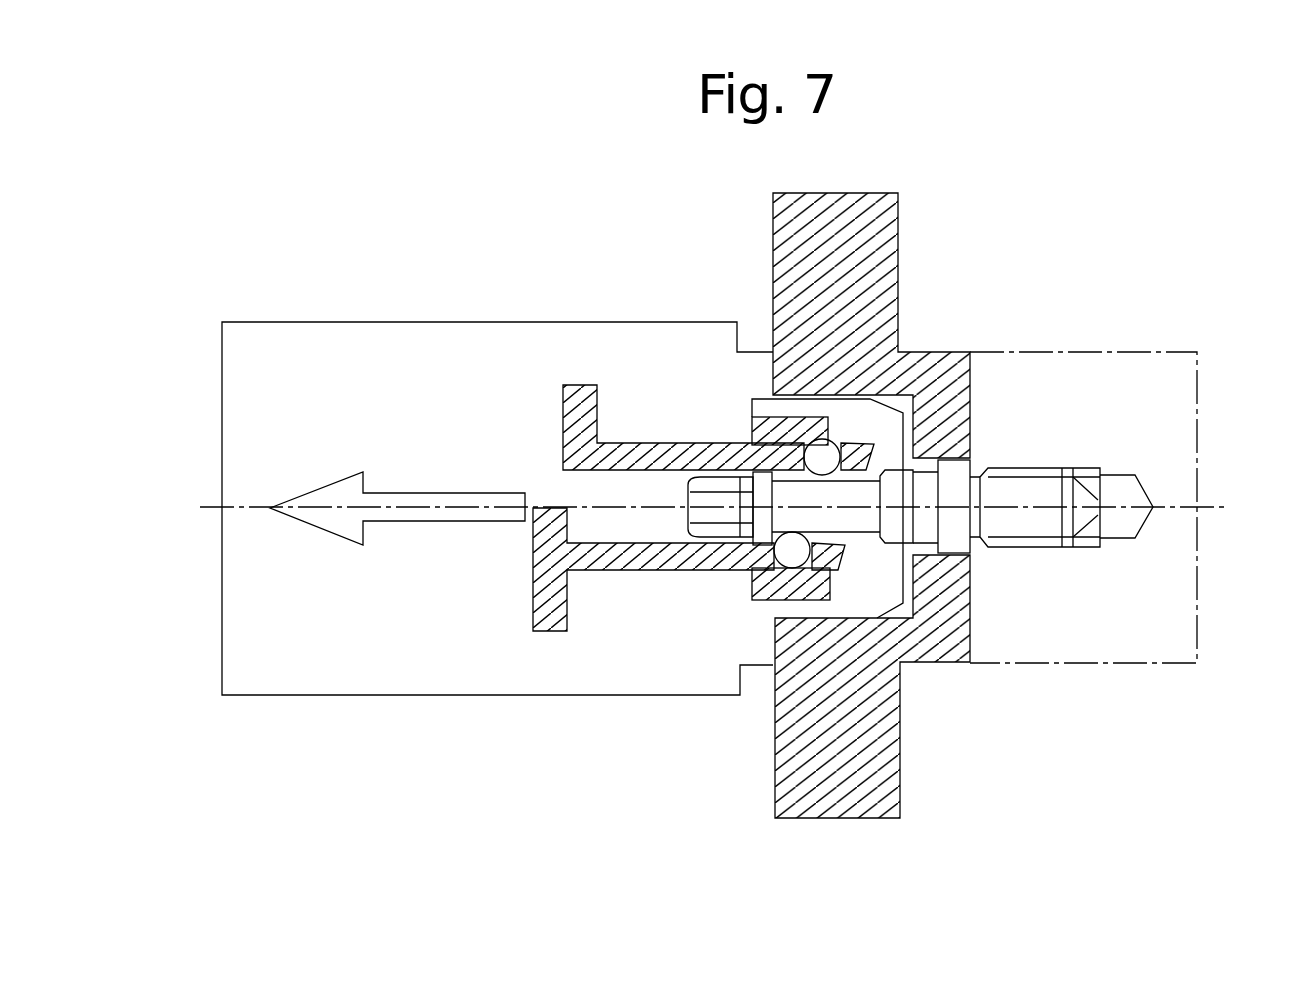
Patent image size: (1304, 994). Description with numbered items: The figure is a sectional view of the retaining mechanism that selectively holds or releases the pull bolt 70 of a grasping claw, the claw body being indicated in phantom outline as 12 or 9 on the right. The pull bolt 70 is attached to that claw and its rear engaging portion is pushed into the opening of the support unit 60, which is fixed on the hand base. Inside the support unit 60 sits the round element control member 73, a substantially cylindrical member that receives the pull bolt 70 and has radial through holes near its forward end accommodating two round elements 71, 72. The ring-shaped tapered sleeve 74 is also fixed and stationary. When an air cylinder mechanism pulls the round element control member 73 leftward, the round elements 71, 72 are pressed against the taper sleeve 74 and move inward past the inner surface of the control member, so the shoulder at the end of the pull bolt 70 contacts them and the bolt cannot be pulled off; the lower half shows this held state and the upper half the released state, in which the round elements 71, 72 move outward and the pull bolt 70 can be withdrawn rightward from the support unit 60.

The support unit 60 is at (777, 757).
The pull bolt 70 is at (1147, 517).
The round element 71 is at (843, 437).
The round element 72 is at (773, 548).
The round element control member 73 is at (812, 562).
The ring-shaped tapered sleeve 74 is at (752, 415).
The carriage / movable member 12 is at (1117, 453).
The carriage / movable member 9 is at (1200, 380).